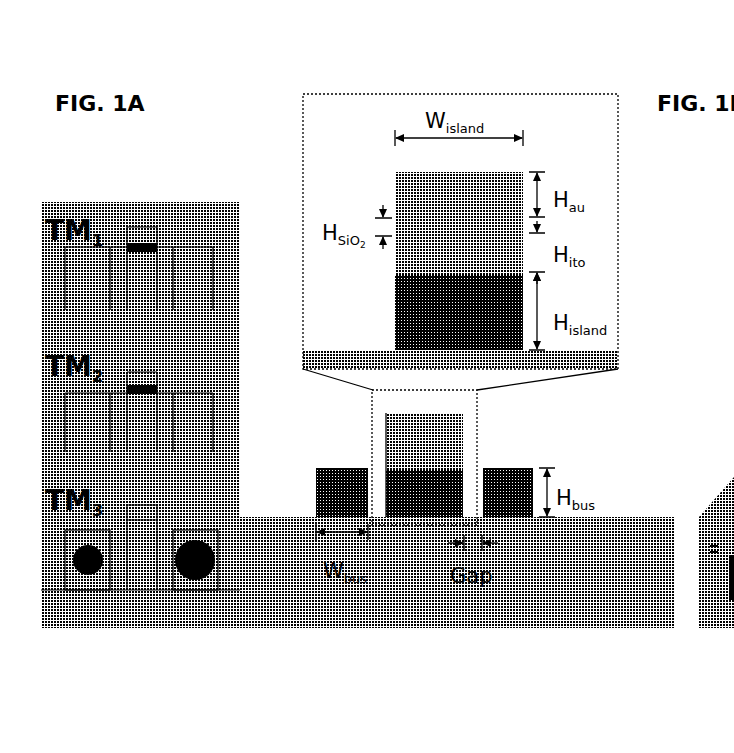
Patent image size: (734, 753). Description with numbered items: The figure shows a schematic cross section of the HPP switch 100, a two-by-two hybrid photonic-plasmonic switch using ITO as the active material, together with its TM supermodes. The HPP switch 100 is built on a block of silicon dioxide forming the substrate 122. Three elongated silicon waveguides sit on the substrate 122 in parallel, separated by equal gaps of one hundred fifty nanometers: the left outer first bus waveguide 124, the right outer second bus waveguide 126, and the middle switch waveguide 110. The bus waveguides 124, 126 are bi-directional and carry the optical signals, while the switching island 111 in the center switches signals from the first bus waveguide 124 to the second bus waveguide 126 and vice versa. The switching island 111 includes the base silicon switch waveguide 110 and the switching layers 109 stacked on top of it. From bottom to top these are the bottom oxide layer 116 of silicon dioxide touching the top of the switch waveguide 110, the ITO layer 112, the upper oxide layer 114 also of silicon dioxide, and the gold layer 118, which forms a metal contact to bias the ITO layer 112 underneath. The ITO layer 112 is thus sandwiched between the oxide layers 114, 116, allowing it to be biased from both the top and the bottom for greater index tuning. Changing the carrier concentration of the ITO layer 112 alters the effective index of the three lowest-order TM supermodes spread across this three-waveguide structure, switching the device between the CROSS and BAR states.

The HPP switch 100 is at (265, 143).
The switching layers 109 is at (597, 218).
The switch waveguide 110 is at (562, 293).
The switching island 111 is at (545, 150).
The ITO layer 112 is at (463, 453).
The upper oxide layer 114 is at (386, 442).
The bottom oxide layer 116 is at (386, 463).
The gold layer 118 is at (463, 423).
The substrate 122 is at (537, 585).
The first bus waveguide 124 is at (314, 518).
The second bus waveguide 126 is at (528, 517).